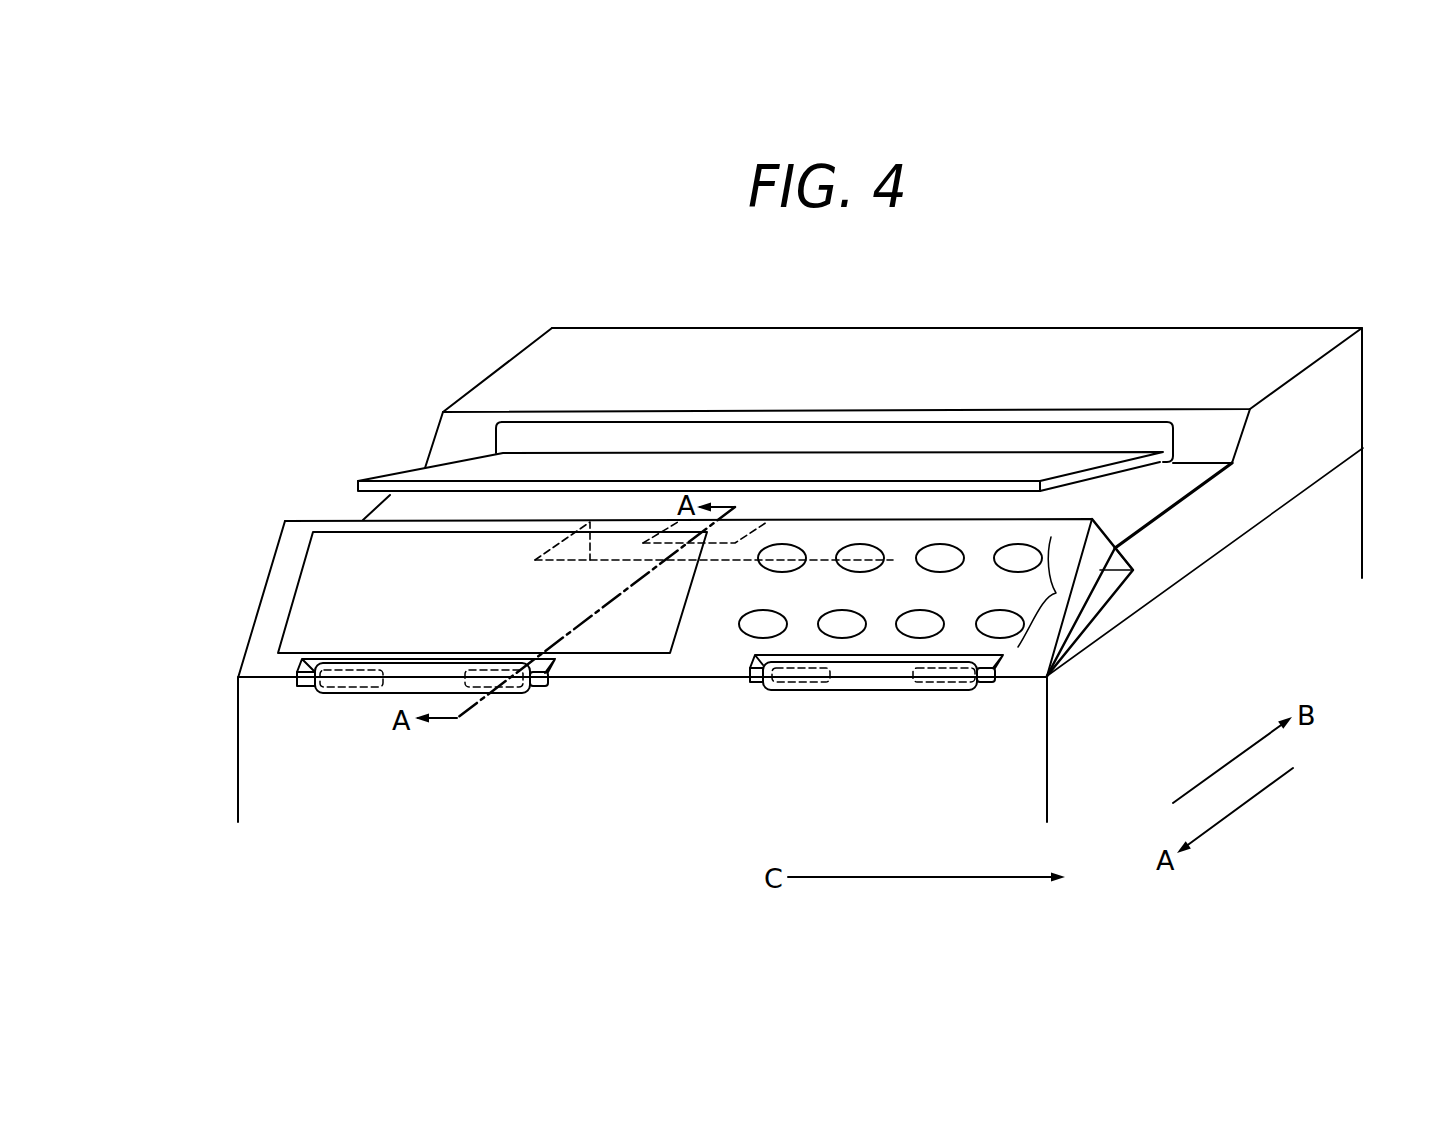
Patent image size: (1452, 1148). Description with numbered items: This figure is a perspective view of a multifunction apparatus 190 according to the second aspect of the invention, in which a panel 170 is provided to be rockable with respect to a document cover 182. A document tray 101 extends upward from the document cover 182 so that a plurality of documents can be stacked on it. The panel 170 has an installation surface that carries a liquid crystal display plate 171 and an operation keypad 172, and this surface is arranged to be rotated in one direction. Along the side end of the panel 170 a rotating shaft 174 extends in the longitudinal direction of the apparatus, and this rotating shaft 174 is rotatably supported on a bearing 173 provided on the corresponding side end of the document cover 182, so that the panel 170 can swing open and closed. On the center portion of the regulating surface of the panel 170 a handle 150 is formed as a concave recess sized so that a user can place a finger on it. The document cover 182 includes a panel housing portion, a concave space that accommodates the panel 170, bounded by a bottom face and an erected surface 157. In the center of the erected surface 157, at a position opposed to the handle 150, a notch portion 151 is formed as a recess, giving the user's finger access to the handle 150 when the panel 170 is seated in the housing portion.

The image forming apparatus main body 190 is at (1270, 313).
The document cover 182 is at (1195, 540).
The document tray 101 is at (1077, 457).
The panel 170 is at (257, 583).
The liquid crystal display plate 171 is at (647, 627).
The operation keypad 172 is at (1056, 593).
The erected surface 157 is at (1135, 575).
The bearing 173 is at (417, 672).
The rotating shaft 174 is at (302, 690).
The notch portion 151 is at (853, 557).
The handle 150 is at (735, 543).